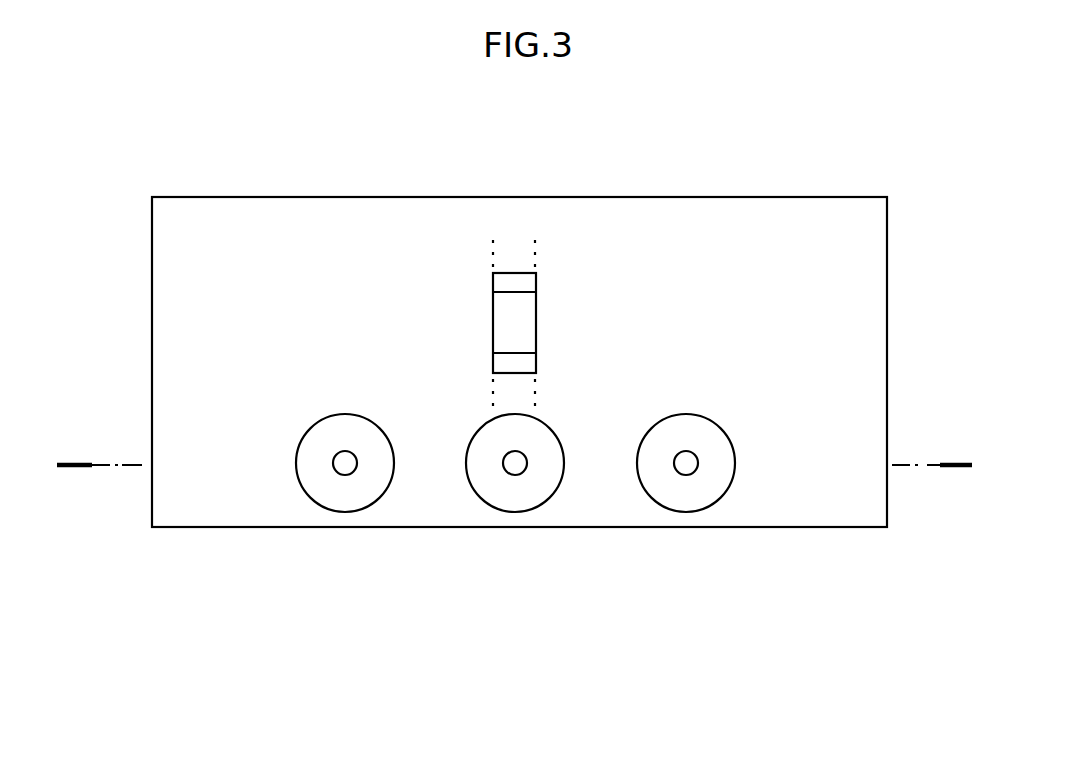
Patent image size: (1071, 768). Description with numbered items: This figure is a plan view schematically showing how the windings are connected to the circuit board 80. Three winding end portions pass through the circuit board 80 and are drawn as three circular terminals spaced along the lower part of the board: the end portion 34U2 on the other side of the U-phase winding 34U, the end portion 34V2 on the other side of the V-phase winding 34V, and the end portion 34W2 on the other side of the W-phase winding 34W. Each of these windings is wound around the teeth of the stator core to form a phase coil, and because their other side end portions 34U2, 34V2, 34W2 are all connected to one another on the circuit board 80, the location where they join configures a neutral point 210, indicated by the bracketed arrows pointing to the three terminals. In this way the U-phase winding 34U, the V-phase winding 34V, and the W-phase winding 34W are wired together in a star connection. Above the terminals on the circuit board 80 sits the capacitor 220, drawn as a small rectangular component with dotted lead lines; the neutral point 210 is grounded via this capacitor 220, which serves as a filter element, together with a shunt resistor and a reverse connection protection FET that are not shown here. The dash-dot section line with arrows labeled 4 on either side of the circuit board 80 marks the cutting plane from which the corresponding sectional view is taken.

The circuit board 80 is at (887, 315).
The end portion on the other side of the U-phase winding 34U2 is at (367, 331).
The U-phase winding 34U is at (343, 451).
The end portion on the other side of the V-phase winding 34V2 is at (617, 310).
The V-phase winding 34V is at (527, 460).
The end portion on the other side of the W-phase winding 34W2 is at (778, 331).
The W-phase winding 34W is at (700, 457).
The capacitor 220 is at (536, 316).
The neutral point 210 is at (662, 533).
The section line IV-IV 4 is at (75, 468).